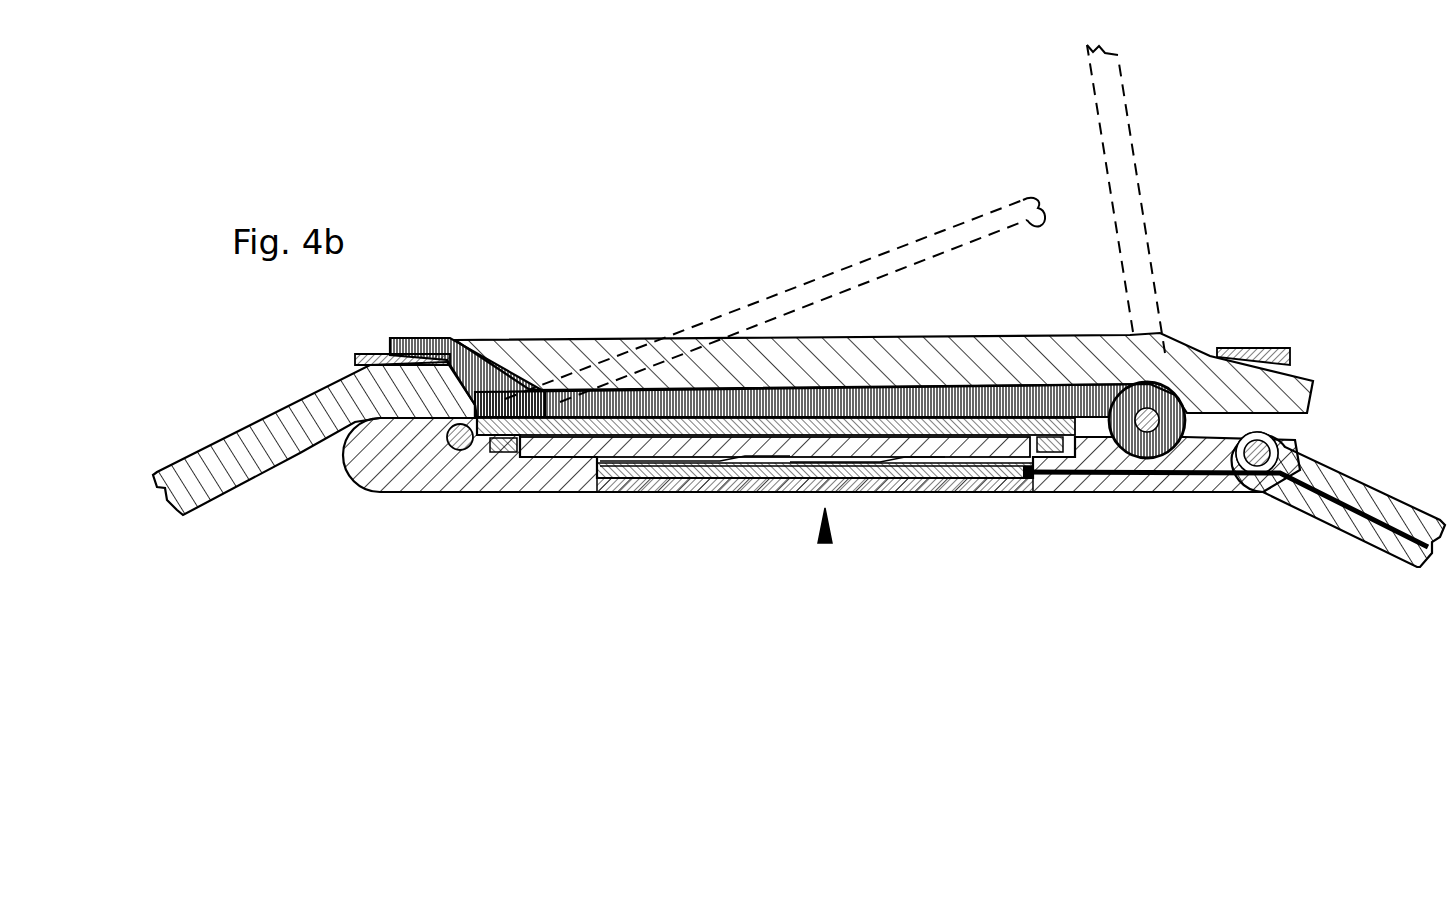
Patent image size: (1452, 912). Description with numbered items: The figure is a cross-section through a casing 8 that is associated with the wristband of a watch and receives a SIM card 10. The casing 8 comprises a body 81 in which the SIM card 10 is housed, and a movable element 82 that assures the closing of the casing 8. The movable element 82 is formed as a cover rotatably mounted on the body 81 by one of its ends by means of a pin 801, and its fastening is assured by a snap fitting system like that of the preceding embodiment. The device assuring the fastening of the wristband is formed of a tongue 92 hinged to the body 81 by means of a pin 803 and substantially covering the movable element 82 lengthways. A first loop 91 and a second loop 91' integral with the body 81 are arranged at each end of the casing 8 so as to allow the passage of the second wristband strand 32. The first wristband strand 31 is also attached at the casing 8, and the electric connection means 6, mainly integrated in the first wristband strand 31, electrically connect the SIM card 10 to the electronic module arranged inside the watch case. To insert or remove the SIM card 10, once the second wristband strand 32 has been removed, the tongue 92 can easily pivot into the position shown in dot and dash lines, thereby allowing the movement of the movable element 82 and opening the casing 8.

The electric connection means 6 is at (1310, 490).
The casing 8 is at (826, 548).
The SIM card 10 is at (548, 446).
The first wristband strand 31 is at (1385, 500).
The second wristband strand 32 is at (232, 445).
The body 81 is at (383, 470).
The movable element 82 is at (950, 392).
The first loop 91 is at (391, 327).
The second loop 91' is at (1253, 331).
The tongue 92 is at (440, 340).
The pin 801 is at (455, 452).
The pin 803 is at (1175, 470).